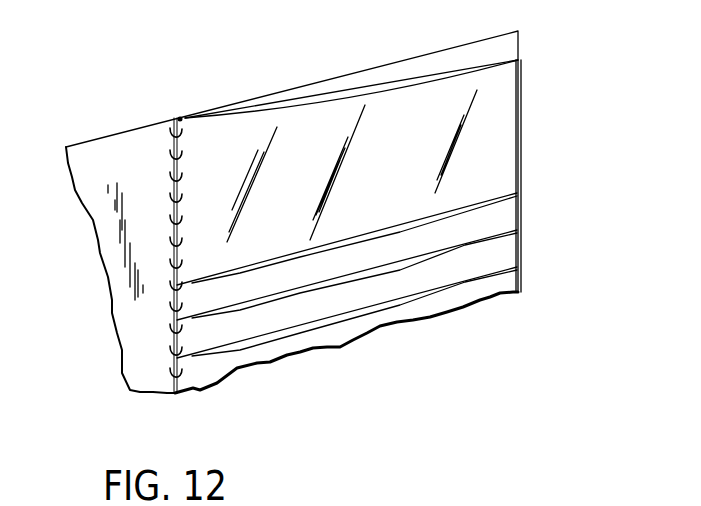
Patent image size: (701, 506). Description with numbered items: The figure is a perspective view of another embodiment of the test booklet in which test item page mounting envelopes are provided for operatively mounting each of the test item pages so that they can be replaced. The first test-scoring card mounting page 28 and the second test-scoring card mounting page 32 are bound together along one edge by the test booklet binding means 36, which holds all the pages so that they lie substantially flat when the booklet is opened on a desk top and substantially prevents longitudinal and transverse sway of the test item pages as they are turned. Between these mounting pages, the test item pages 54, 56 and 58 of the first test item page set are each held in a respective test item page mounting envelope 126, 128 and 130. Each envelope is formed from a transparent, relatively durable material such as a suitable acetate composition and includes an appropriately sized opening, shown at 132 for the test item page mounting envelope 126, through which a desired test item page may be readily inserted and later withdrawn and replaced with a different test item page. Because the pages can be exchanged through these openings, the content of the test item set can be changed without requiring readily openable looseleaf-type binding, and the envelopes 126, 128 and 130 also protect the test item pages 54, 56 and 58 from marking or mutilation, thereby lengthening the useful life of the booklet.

The first test-scoring card mounting page 28 is at (130, 150).
The second test-scoring card mounting page 32 is at (453, 44).
The test booklet binding means 36 is at (184, 117).
The test item page 54 is at (380, 83).
The test item page 56 is at (387, 263).
The test item page 58 is at (312, 327).
The test item page mounting envelope 126 is at (502, 110).
The test item page mounting envelope 128 is at (503, 214).
The test item page mounting envelope 130 is at (505, 255).
The opening 132 is at (295, 88).